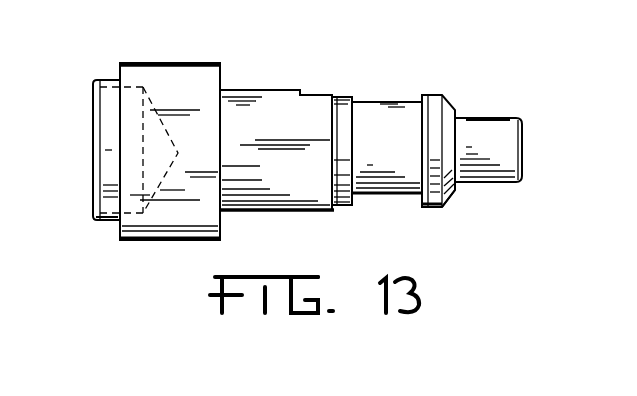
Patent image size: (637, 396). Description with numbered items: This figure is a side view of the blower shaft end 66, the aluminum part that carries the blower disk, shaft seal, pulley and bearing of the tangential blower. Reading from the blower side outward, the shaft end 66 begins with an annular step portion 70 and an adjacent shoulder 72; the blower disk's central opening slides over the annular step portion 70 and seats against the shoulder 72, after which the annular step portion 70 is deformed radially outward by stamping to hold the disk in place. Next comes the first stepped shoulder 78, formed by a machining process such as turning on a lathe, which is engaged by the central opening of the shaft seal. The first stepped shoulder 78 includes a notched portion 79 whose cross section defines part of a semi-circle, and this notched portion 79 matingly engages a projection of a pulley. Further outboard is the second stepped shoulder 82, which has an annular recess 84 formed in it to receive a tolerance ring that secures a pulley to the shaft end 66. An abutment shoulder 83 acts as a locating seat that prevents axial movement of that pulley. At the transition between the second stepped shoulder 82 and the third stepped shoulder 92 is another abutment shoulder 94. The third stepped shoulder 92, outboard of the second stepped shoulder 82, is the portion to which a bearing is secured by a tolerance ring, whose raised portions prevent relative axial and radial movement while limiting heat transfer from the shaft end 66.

The shaft end 66 is at (200, 58).
The annular step portion 70 is at (101, 78).
The shoulder 72 is at (116, 72).
The first stepped shoulder 78 is at (260, 89).
The notched portion 79 is at (318, 96).
The second stepped shoulder 82 is at (346, 206).
The abutment shoulder 83 is at (334, 212).
The annular recess 84 is at (389, 101).
The third stepped shoulder 92 is at (499, 117).
The abutment shoulder 94 is at (460, 188).